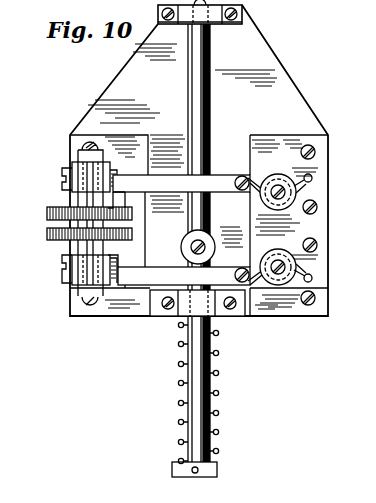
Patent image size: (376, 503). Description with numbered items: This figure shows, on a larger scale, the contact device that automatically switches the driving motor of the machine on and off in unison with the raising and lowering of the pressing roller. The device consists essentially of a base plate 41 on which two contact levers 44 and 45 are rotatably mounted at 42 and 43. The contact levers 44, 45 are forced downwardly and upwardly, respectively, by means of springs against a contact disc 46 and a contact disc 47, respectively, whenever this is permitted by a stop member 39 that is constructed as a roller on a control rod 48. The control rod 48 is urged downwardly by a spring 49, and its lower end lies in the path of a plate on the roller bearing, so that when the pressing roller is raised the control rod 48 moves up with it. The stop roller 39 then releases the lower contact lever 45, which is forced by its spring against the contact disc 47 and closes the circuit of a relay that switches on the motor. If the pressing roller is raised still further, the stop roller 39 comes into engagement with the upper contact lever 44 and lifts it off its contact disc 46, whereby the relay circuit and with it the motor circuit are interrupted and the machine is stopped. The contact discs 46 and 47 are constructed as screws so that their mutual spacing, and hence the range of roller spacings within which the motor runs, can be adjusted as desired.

The stop member 39 is at (208, 237).
The base plate 41 is at (267, 58).
The pivot of contact lever 42 is at (279, 180).
The pivot of contact lever 43 is at (282, 286).
The contact lever 44 is at (212, 176).
The contact lever 45 is at (157, 275).
The contact disc 46 is at (53, 207).
The contact disc 47 is at (55, 242).
The control rod 48 is at (183, 352).
The spring 49 is at (212, 412).